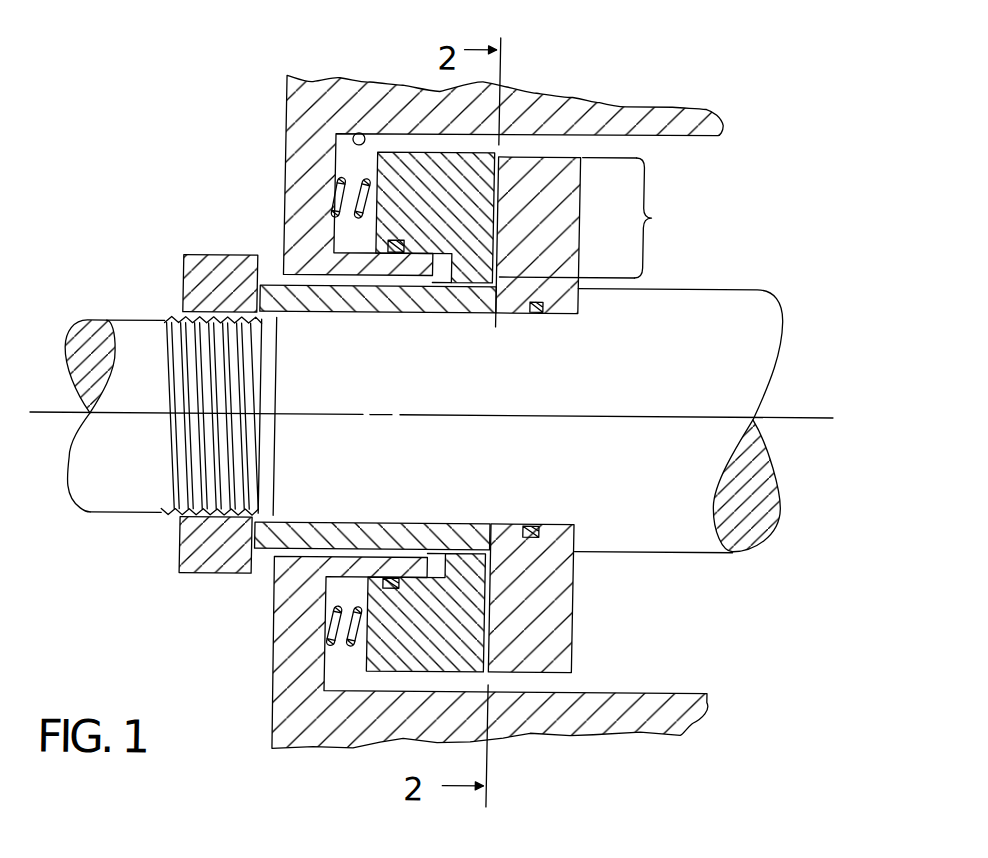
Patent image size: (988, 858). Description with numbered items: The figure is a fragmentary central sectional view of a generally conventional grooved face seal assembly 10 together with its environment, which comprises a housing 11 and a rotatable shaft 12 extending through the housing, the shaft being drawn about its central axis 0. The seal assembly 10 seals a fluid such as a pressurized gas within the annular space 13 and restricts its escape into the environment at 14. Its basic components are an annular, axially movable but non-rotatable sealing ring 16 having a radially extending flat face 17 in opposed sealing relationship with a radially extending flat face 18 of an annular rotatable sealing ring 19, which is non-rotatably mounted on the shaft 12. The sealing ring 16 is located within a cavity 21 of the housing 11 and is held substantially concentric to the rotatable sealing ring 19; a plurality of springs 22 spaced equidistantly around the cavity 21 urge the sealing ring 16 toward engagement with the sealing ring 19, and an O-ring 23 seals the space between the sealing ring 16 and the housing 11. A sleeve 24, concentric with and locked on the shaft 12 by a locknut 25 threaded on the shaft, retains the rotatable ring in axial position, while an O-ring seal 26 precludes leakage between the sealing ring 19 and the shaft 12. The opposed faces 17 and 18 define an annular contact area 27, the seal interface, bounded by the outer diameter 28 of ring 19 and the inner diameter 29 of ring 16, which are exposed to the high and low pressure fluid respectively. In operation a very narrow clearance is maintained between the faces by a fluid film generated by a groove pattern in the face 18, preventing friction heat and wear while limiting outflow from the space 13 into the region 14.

The axis of rotation 0 is at (790, 415).
The grooved face seal assembly 10 is at (518, 148).
The housing 11 is at (683, 107).
The rotatable shaft 12 is at (735, 306).
The annular space 13 is at (713, 653).
The environment 14 is at (173, 48).
The sealing ring 16 is at (389, 174).
The flat face 17 is at (494, 245).
The flat face 18 is at (483, 597).
The rotatable sealing ring 19 is at (566, 592).
The cavity 21 is at (351, 134).
The springs 22 is at (331, 638).
The O-ring 23 is at (387, 580).
The sleeve 24 is at (349, 317).
The locknut 25 is at (183, 279).
The O-ring seal 26 is at (532, 526).
The annular contact area 27 is at (599, 217).
The outer diameter 28 is at (568, 152).
The inner diameter 29 is at (463, 293).